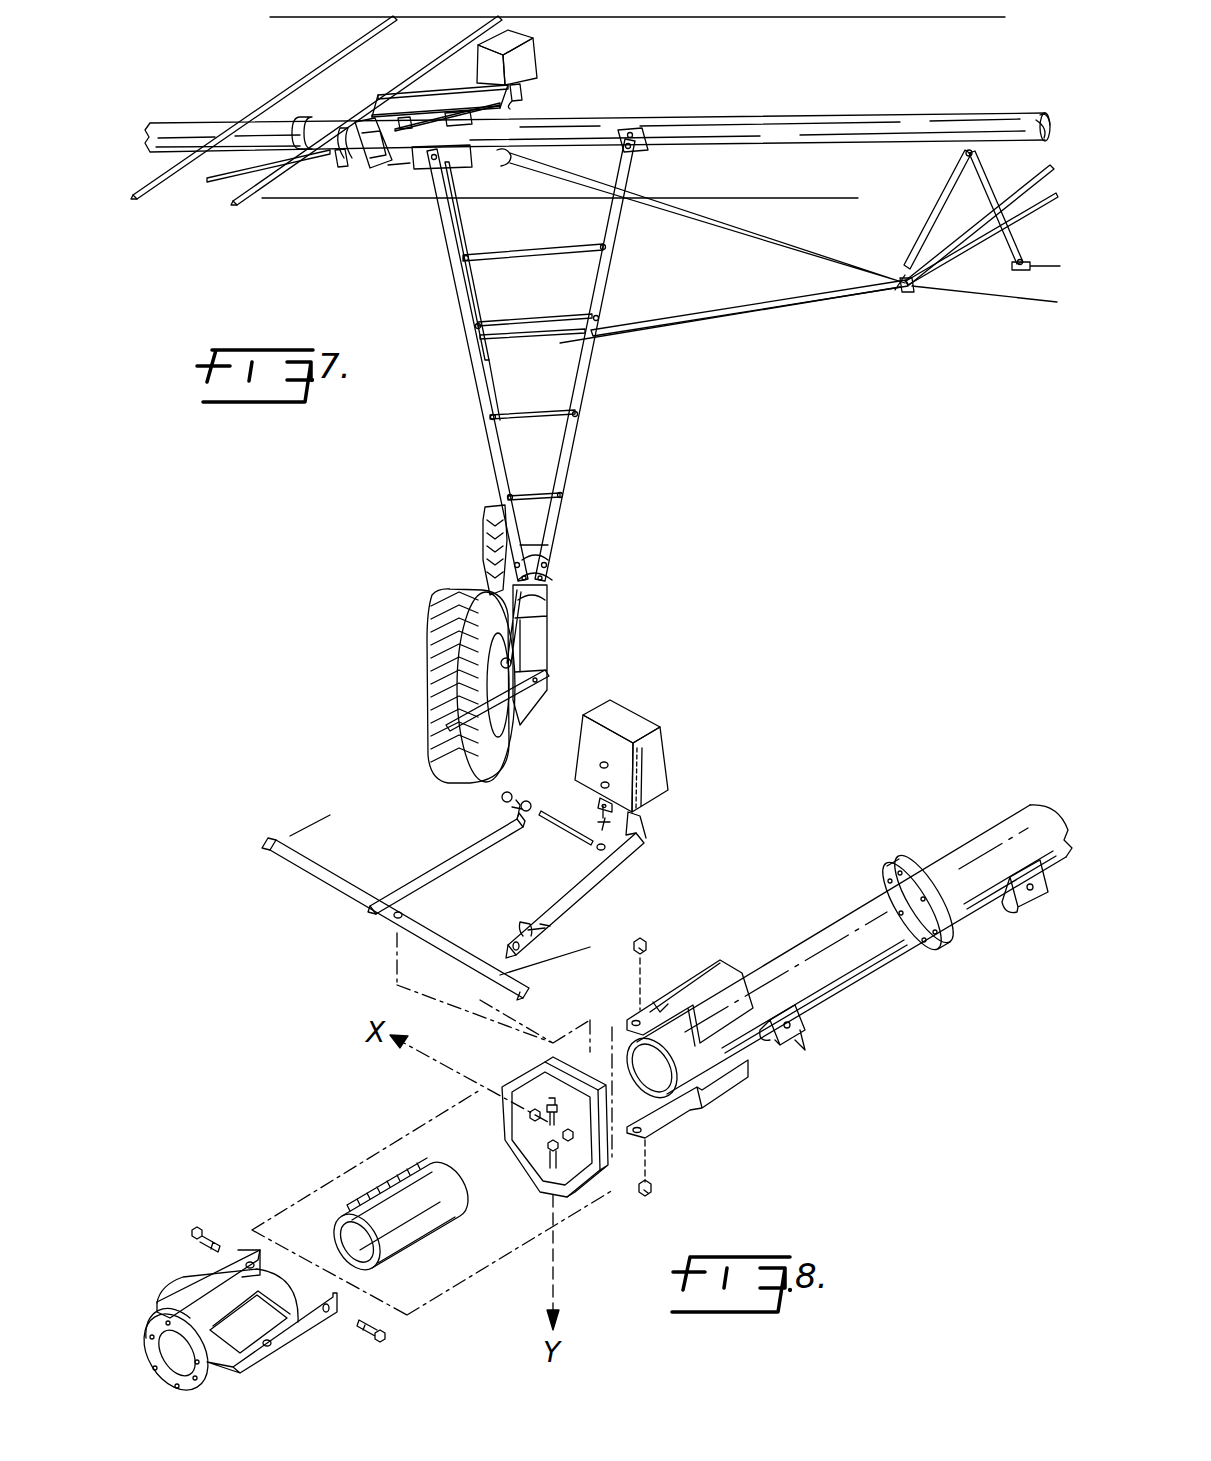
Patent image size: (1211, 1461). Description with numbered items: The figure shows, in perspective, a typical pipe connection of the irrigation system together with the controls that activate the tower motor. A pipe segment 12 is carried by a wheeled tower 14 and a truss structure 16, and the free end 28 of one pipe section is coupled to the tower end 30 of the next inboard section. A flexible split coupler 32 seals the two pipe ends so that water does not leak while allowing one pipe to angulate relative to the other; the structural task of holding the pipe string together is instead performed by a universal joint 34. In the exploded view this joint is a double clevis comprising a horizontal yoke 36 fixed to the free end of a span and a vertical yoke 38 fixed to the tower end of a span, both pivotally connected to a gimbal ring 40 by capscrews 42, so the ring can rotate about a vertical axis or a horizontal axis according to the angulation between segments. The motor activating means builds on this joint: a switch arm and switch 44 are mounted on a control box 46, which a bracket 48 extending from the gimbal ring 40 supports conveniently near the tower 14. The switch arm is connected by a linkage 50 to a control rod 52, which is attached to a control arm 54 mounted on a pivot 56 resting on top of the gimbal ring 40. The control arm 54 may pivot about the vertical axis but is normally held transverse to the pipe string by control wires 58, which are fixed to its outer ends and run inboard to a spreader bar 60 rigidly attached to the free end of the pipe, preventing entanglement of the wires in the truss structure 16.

In FIG. 7, the pipe segment 12 is at (918, 116).
In FIG. 7, the wheeled tower 14 is at (467, 398).
In FIG. 7, the truss structure 16 is at (905, 305).
In FIG. 7, the free end 28 is at (190, 102).
In FIG. 8, the free end 28 is at (287, 1278).
In FIG. 7, the tower end 30 is at (568, 123).
In FIG. 8, the tower end 30 is at (852, 975).
In FIG. 7, the flexible split coupler 32 is at (352, 158).
In FIG. 8, the flexible split coupler 32 is at (428, 1232).
In FIG. 7, the universal joint 34 is at (383, 172).
In FIG. 8, the horizontal yoke 36 is at (297, 1333).
In FIG. 8, the vertical yoke 38 is at (728, 965).
In FIG. 8, the gimbal ring 40 is at (535, 1182).
In FIG. 8, the capscrew 42 is at (198, 1226).
In FIG. 8, the switch arm and switch 44 is at (598, 808).
In FIG. 7, the control box 46 is at (535, 48).
In FIG. 8, the control box 46 is at (668, 740).
In FIG. 7, the bracket 48 is at (511, 100).
In FIG. 8, the bracket 48 is at (597, 878).
In FIG. 8, the linkage 50 is at (563, 830).
In FIG. 7, the control rod 52 is at (432, 100).
In FIG. 8, the control rod 52 is at (447, 856).
In FIG. 7, the control arm 54 is at (440, 54).
In FIG. 8, the control arm 54 is at (330, 893).
In FIG. 8, the pivot 56 is at (550, 1100).
In FIG. 7, the control wires 58 is at (318, 19).
In FIG. 8, the control wires 58 is at (316, 822).
In FIG. 7, the bar 60 is at (291, 88).